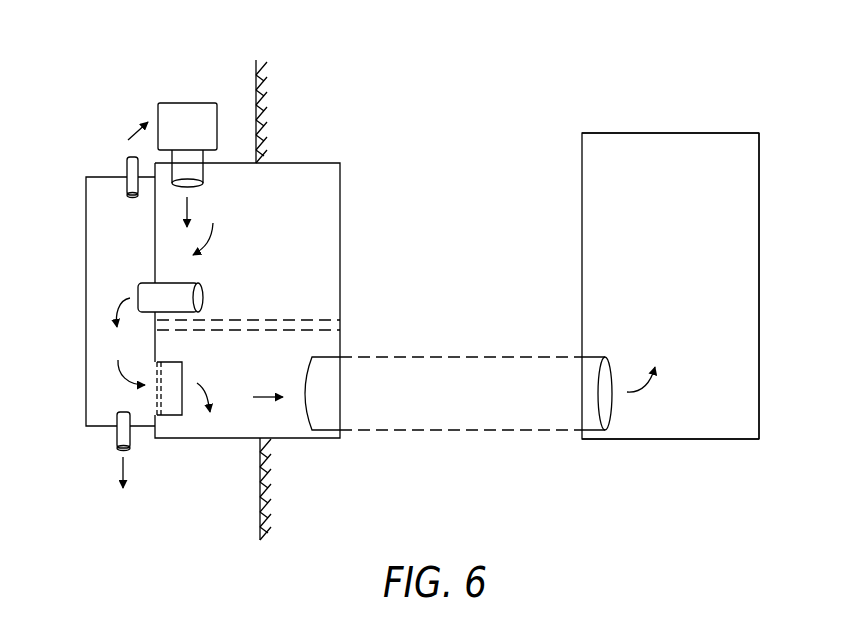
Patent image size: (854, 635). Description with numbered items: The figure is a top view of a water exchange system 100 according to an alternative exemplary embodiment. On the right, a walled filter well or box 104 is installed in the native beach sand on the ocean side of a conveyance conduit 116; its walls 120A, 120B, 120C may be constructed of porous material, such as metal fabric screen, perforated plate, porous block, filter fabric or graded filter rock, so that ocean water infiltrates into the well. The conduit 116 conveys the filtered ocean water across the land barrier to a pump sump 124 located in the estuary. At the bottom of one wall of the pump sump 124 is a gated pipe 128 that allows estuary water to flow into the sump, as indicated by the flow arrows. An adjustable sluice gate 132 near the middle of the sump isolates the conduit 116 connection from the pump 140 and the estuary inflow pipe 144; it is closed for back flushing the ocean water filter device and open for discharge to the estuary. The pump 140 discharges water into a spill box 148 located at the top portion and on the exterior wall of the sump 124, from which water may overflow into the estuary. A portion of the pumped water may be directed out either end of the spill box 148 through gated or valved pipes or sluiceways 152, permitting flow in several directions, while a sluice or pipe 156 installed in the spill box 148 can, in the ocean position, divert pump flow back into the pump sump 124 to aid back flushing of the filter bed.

The water exchange system 100 is at (510, 86).
The filter well or box 104 is at (687, 283).
The conveyance conduit 116 is at (467, 401).
The wall 120A is at (760, 317).
The wall 120B is at (680, 132).
The wall 120C is at (702, 439).
The pump sump 124 is at (270, 244).
The gated pipe 128 is at (182, 372).
The adjustable sluice gate 132 is at (253, 320).
The pump 140 is at (210, 225).
The estuary inflow pipe 144 is at (170, 283).
The spill box 148 is at (86, 229).
The gated or valved pipes or sluiceways 152 is at (125, 167).
The sluice or pipe 156 is at (203, 157).